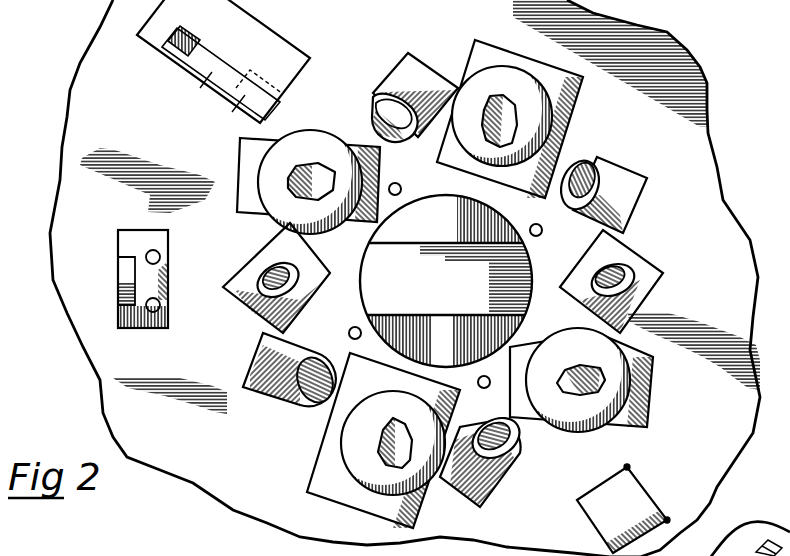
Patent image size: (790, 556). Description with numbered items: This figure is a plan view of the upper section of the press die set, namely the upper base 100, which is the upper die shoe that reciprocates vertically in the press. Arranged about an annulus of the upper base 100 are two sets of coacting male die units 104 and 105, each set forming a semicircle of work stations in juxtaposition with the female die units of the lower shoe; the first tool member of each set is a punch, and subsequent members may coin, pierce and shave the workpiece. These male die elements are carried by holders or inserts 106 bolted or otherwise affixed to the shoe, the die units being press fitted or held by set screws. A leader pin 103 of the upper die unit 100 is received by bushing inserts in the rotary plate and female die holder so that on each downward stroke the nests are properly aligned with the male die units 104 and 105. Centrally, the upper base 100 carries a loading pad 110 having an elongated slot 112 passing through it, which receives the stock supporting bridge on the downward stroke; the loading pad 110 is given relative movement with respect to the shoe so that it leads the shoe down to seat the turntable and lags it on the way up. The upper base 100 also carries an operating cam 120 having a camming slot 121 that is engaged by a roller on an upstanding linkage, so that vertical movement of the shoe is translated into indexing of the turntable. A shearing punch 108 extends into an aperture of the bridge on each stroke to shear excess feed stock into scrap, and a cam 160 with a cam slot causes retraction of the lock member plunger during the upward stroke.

The upper base 100 is at (162, 134).
The leader pin 103 is at (396, 183).
The male die units 104 is at (313, 172).
The male die units 105 is at (300, 372).
The holders or inserts 106 is at (620, 172).
The shearing punch 108 is at (125, 272).
The loading pad 110 is at (457, 225).
The elongated slot 112 is at (489, 284).
The operating cam 120 is at (283, 48).
The camming slot 121 is at (197, 50).
The cam 160 is at (572, 513).